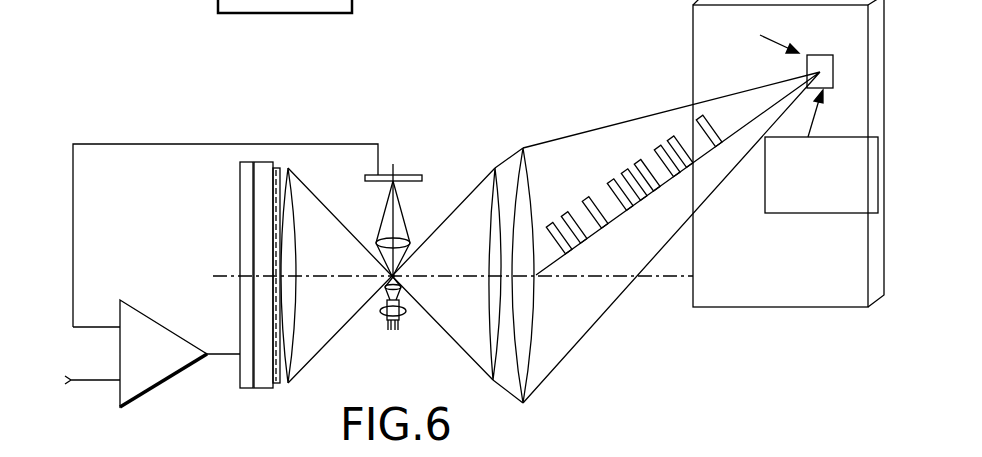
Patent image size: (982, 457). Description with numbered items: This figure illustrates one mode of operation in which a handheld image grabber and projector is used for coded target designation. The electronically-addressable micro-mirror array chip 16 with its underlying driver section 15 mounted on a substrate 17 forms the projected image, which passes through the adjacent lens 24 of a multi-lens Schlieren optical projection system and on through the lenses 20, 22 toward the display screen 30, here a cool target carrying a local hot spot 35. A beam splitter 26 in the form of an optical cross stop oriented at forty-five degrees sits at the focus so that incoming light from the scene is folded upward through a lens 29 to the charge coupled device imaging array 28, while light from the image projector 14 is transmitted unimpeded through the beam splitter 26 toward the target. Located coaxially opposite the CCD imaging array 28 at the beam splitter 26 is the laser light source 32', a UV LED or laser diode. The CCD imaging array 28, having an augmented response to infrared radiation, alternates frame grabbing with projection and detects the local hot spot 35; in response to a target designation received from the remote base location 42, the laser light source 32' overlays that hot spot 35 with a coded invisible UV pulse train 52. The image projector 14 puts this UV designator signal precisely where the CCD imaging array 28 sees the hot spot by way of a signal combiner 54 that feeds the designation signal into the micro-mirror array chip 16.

The image projector 14 is at (305, 263).
The driver section 15 is at (262, 388).
The micro-mirror array chip 16 is at (285, 168).
The substrate 17 is at (243, 300).
The lens 20 is at (490, 223).
The lens 22 is at (536, 298).
The lens 24 is at (296, 200).
The beam splitter 26 is at (396, 275).
The CCD imaging array 28 is at (408, 174).
The lens 29 is at (400, 240).
The display screen 30 is at (728, 308).
The laser light source 32' is at (418, 329).
The local hot spot 35 is at (850, 214).
The remote location 42 is at (68, 380).
The coded UV pulse train 52 is at (614, 174).
The signal combiner 54 is at (163, 377).